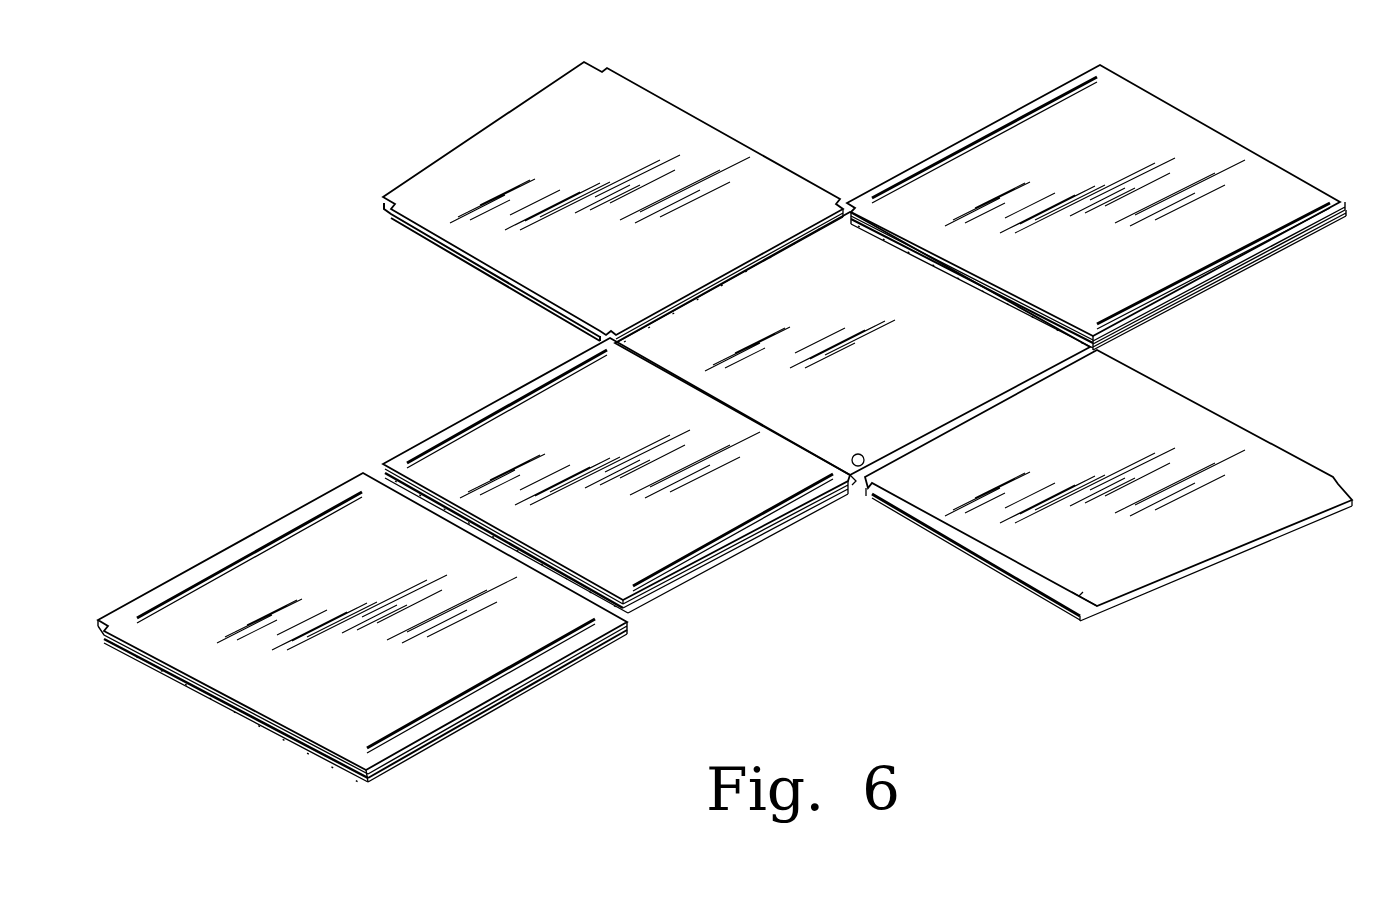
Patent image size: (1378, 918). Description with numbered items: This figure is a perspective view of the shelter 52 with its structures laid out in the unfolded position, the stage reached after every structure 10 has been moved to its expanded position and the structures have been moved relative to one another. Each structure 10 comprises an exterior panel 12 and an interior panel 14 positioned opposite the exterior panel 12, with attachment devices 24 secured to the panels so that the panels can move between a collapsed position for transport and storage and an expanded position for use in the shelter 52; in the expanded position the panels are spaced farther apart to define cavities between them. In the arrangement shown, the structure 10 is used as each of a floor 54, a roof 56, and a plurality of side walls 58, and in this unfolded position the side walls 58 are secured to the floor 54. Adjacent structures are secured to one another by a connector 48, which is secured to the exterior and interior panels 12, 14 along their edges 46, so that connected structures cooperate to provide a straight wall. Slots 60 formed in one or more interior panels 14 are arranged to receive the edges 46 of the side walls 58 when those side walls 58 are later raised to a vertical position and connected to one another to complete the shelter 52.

The structure 10 is at (656, 88).
The exterior panel 12 is at (1342, 202).
The interior panel 14 is at (1340, 222).
The attachment devices 24 is at (283, 742).
The edges 46 is at (740, 135).
The connector 48 is at (850, 476).
The shelter 52 is at (403, 91).
The floor 54 is at (867, 240).
The roof 56 is at (193, 620).
The side walls 58 is at (1130, 108).
The slots 60 is at (1008, 130).